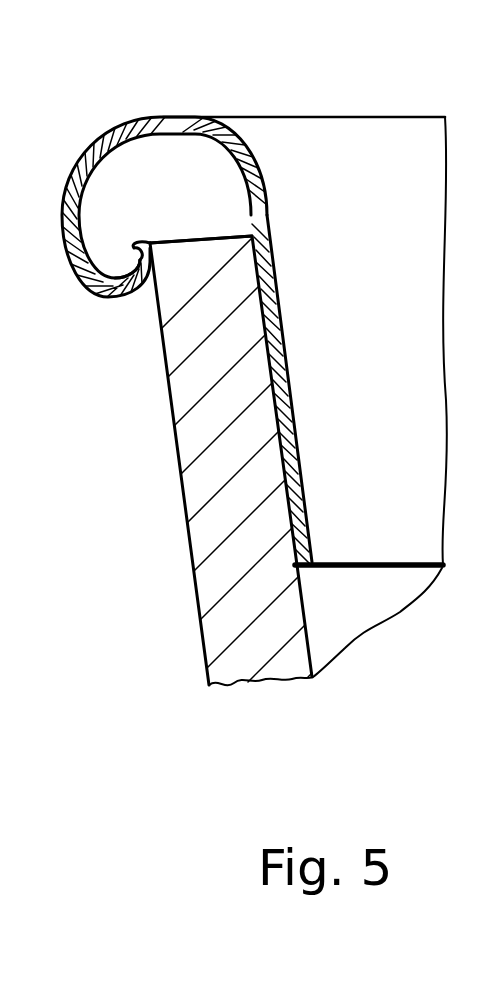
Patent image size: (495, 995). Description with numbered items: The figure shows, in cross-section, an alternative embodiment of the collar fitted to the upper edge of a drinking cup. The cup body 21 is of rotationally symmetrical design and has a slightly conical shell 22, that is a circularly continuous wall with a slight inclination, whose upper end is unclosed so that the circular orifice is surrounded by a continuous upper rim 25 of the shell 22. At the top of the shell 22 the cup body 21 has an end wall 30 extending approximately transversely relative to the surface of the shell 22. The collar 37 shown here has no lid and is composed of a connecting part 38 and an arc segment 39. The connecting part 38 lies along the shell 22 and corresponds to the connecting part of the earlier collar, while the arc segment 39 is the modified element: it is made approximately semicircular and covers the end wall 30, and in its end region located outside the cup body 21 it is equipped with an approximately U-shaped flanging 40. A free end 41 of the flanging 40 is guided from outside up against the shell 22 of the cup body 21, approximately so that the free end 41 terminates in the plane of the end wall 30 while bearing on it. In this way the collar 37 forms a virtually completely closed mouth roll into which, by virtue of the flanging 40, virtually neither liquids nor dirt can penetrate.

The cup body 21 is at (167, 628).
The shell 22 is at (253, 662).
The upper rim 25 is at (176, 292).
The end wall 30 is at (215, 238).
The collar 37 is at (174, 103).
The connecting part 38 is at (298, 442).
The arc segment 39 is at (122, 133).
The flanging 40 is at (123, 284).
The free end 41 is at (148, 245).